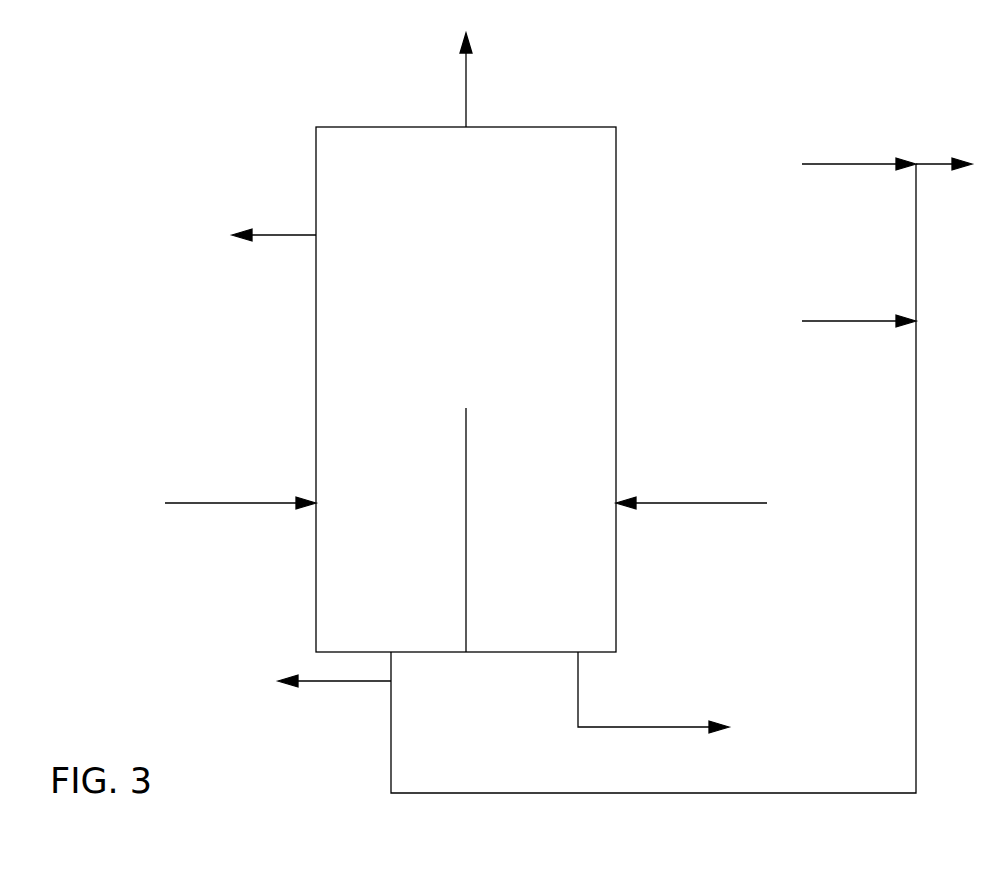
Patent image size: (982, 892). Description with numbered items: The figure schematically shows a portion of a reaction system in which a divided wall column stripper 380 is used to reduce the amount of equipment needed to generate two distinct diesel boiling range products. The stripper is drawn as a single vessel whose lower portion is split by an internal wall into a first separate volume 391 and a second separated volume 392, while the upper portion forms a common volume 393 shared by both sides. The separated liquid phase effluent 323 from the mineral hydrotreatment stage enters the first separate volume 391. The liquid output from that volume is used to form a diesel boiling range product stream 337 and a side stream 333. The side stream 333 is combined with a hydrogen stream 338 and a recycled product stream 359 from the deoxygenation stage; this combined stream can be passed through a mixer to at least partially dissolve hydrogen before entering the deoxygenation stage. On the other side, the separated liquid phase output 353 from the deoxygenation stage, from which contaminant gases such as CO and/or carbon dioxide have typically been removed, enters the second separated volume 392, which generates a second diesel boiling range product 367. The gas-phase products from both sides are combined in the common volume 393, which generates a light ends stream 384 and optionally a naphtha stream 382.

The divided wall column stripper 380 is at (307, 352).
The common volume 393 is at (442, 266).
The first separate volume 391 is at (372, 573).
The second separated volume 392 is at (522, 573).
The light ends stream 384 is at (438, 52).
The naphtha stream 382 is at (250, 259).
The separated liquid phase effluent 323 is at (232, 522).
The separated liquid phase output 353 is at (653, 473).
The side stream 333 is at (373, 737).
The diesel boiling range product stream 337 is at (303, 703).
The second diesel boiling range product 367 is at (672, 700).
The hydrogen stream 338 is at (856, 183).
The recycled product stream 359 is at (856, 339).